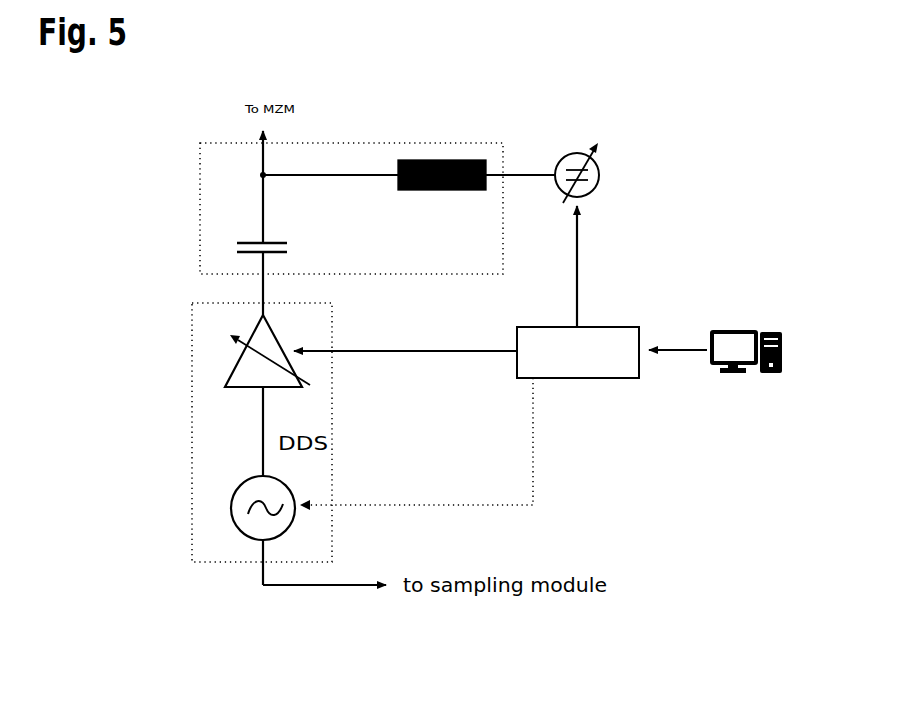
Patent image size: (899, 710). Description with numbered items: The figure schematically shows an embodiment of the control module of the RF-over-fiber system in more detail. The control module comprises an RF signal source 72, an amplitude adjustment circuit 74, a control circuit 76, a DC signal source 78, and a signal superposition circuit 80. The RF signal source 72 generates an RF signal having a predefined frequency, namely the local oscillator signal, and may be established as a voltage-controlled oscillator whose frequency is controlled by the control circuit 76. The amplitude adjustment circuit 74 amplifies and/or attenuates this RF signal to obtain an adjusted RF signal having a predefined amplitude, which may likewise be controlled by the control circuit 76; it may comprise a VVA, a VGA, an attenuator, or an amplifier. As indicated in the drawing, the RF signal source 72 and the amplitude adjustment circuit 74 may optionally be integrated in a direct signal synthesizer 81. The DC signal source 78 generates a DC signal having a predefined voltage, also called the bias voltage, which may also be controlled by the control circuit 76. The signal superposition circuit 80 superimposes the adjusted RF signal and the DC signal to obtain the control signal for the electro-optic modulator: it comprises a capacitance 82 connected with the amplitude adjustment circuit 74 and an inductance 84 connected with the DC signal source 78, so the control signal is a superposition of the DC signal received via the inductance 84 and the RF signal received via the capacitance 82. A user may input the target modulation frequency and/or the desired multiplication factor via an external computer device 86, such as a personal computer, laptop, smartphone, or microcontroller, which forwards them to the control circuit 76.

The RF signal source 72 is at (231, 512).
The amplitude adjustment circuit 74 is at (233, 370).
The control circuit 76 is at (578, 380).
The DC signal source 78 is at (600, 175).
The signal superposition circuit 80 is at (200, 205).
The direct signal synthesizer (DDS) 81 is at (192, 440).
The capacitance 82 is at (237, 252).
The inductance 84 is at (446, 160).
The external computer device 86 is at (748, 373).